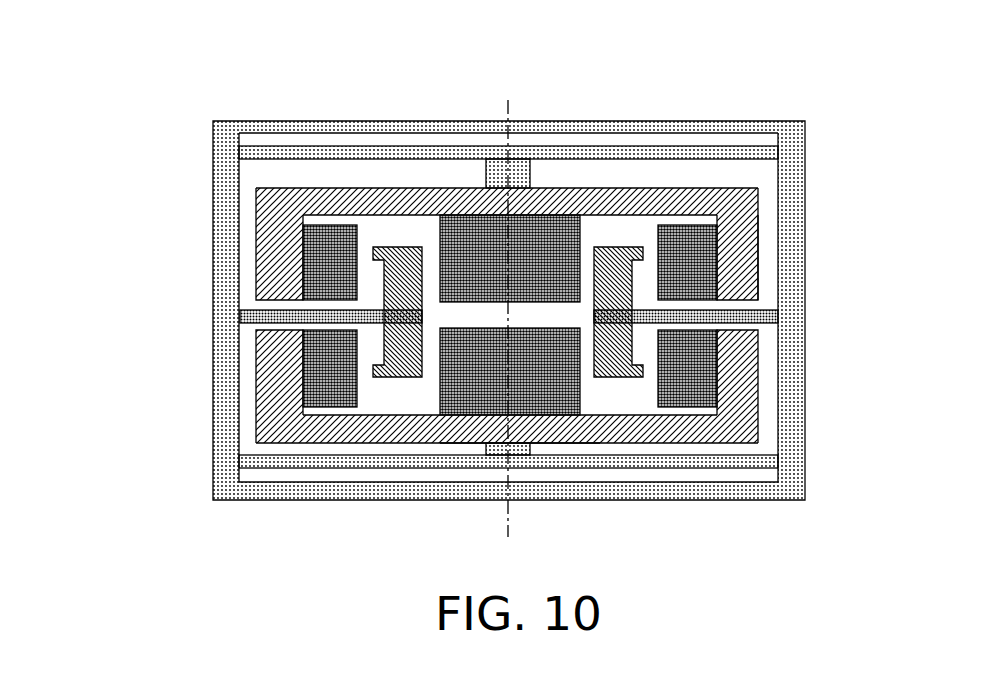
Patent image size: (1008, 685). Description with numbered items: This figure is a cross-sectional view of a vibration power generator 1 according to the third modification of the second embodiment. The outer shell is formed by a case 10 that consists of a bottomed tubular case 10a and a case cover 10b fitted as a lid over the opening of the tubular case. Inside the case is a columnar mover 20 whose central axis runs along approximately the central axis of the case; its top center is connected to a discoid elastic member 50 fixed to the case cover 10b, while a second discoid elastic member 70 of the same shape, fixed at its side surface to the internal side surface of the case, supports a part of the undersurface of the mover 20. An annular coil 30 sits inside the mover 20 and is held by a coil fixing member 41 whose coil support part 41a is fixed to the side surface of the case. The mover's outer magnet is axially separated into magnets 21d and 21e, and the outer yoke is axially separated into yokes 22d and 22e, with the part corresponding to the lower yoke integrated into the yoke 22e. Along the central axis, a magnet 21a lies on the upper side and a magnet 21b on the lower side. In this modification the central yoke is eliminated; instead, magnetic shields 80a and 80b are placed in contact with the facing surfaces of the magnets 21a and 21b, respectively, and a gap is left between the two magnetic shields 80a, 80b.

The vibration power generator 1 is at (463, 288).
The case 10 is at (414, 285).
The bottomed tubular case 10a is at (230, 178).
The case cover 10b is at (233, 120).
The mover 20 is at (514, 347).
The magnet 21a is at (582, 240).
The magnet 21b is at (580, 387).
The magnet 21d is at (283, 245).
The magnet 21e is at (290, 338).
The yoke 22d is at (758, 233).
The yoke 22e is at (592, 432).
The coil 30 is at (383, 292).
The coil fixing member 41 is at (383, 342).
The coil support part 41a is at (247, 316).
The elastic member 50 is at (778, 148).
The elastic member 70 is at (320, 462).
The magnetic shield 80a is at (452, 245).
The magnetic shield 80b is at (487, 345).